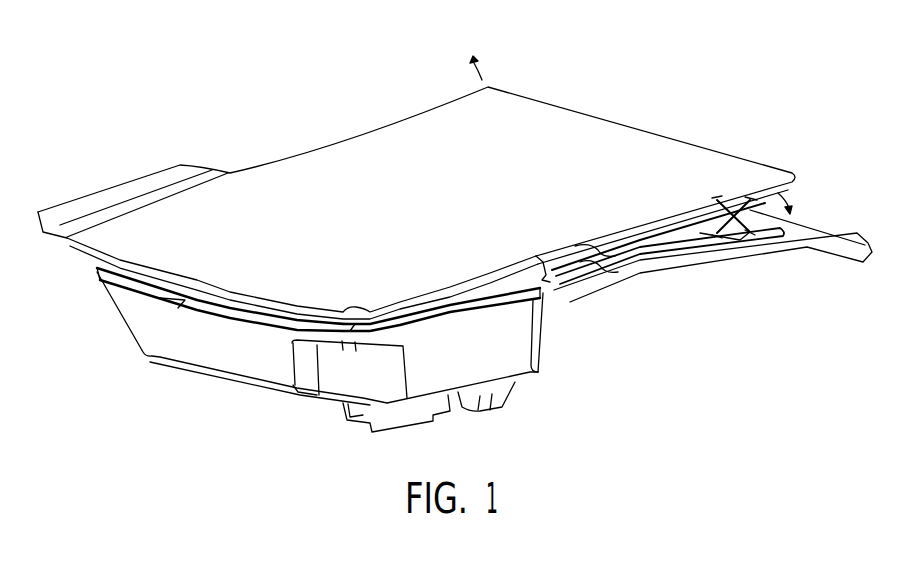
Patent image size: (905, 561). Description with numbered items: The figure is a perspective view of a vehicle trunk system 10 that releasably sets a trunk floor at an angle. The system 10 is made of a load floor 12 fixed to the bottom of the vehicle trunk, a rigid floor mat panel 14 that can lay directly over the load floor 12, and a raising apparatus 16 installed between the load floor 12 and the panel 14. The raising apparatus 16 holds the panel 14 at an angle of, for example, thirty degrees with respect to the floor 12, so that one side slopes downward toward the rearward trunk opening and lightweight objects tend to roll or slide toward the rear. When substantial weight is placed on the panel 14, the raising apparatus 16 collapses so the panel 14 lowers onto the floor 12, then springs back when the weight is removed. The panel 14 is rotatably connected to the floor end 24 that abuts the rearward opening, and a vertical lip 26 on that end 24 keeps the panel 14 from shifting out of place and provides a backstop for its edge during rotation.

The system 10 is at (336, 80).
The load floor 12 is at (570, 280).
The rigid floor mat panel 14 is at (633, 148).
The raising apparatus 16 is at (728, 270).
The end of floor 24 is at (182, 340).
The vertical lip 26 is at (103, 277).